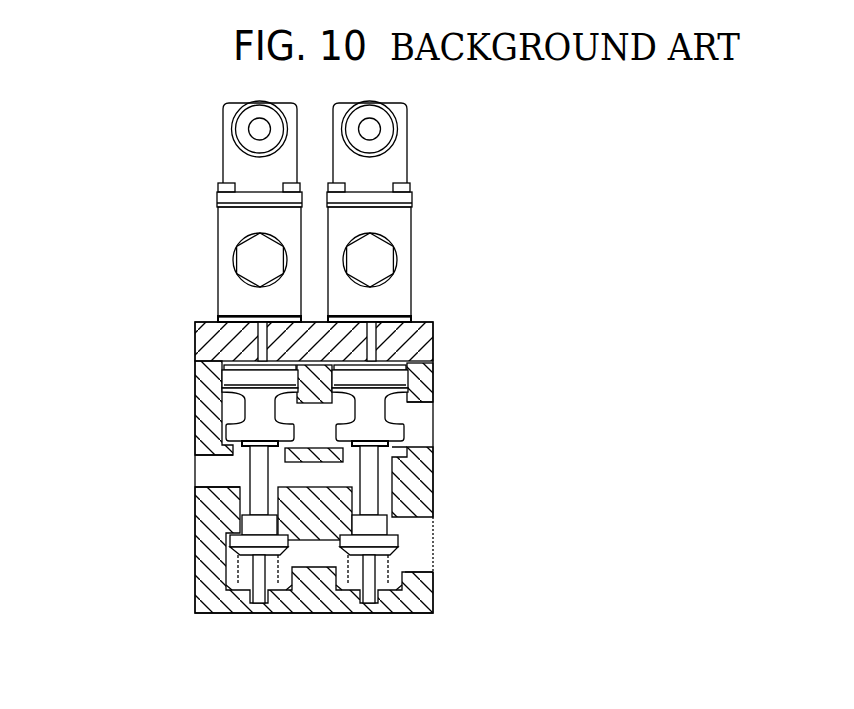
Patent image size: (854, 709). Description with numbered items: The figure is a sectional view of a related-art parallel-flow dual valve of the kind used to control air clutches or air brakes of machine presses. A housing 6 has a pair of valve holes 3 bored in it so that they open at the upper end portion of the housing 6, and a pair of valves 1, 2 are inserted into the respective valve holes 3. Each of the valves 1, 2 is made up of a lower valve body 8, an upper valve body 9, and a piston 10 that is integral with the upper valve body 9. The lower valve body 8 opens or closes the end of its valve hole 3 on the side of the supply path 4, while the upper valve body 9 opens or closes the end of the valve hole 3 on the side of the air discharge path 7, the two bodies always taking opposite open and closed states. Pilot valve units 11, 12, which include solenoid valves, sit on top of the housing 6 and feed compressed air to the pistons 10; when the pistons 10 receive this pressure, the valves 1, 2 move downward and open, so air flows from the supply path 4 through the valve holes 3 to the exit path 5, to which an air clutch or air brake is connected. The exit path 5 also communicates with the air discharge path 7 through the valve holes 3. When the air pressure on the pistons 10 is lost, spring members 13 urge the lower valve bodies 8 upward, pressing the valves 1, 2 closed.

The valve 1 is at (234, 502).
The valve 2 is at (398, 493).
The valve hole 3 is at (238, 476).
The supply path 4 is at (417, 567).
The exit path 5 is at (210, 467).
The housing 6 is at (303, 602).
The air discharge path 7 is at (413, 413).
The lower valve body 8 is at (230, 530).
The upper valve body 9 is at (245, 427).
The piston 10 is at (243, 378).
The pilot valve unit 11 is at (177, 211).
The pilot valve unit 12 is at (428, 241).
The spring member 13 is at (222, 560).